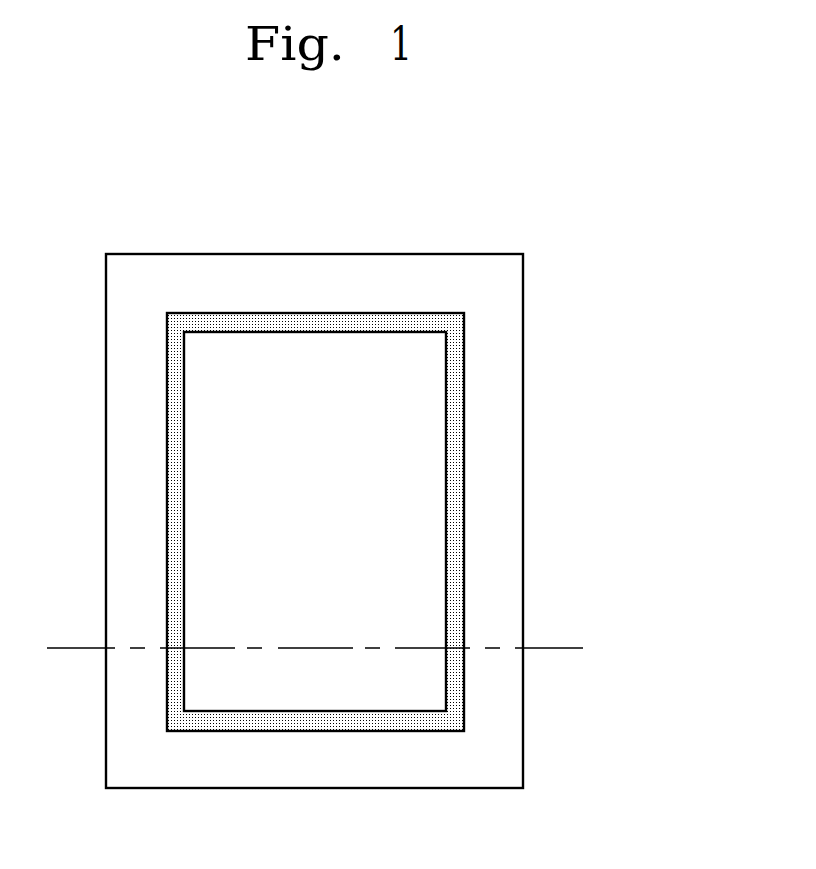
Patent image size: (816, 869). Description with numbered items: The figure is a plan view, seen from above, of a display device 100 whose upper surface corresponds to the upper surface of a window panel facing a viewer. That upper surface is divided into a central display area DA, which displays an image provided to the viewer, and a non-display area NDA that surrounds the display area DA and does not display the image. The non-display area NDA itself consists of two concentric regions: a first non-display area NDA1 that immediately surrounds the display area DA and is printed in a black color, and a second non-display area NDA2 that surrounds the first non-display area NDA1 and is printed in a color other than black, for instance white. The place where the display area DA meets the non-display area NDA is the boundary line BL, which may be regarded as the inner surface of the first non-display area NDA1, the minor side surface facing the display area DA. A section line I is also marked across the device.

The display device 100 is at (548, 208).
The display area DA is at (427, 413).
The non-display area NDA is at (620, 447).
The first non-display area NDA1 is at (458, 460).
The second non-display area NDA2 is at (515, 507).
The boundary line BL is at (443, 542).
The section line I-I' I is at (47, 640).